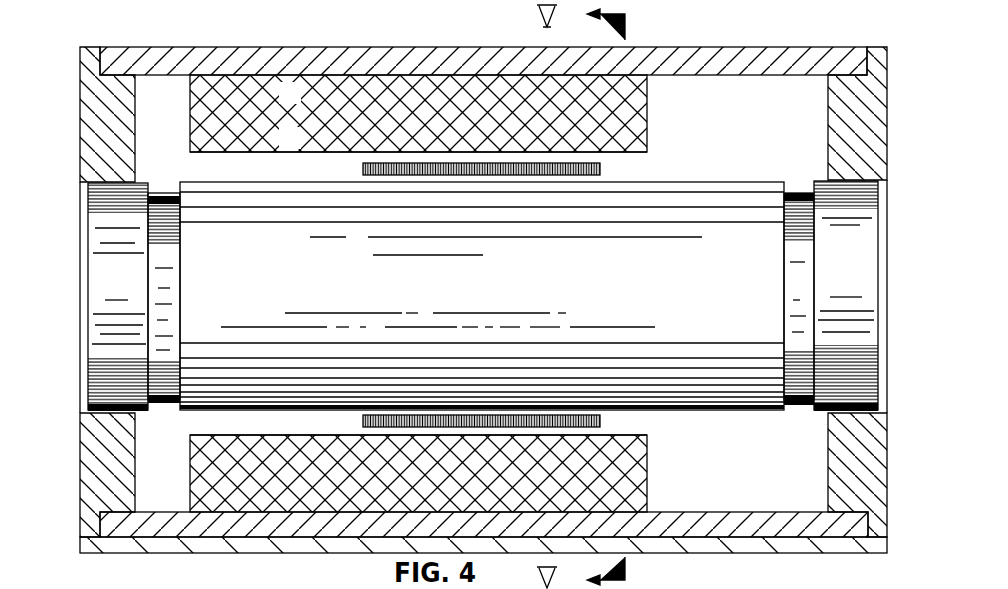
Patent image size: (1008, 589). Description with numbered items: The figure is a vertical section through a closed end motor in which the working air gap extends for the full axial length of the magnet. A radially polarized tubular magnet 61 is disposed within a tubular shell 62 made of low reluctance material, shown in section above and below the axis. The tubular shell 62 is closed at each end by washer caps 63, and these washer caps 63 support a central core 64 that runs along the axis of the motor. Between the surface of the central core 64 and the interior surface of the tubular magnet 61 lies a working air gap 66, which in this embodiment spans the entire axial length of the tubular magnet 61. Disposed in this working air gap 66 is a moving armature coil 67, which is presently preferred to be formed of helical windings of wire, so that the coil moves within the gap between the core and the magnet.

The tubular magnet 61 is at (645, 112).
The tubular shell 62 is at (318, 50).
The washer cap 63 is at (90, 106).
The central core 64 is at (205, 188).
The working air gap 66 is at (660, 147).
The moving armature coil 67 is at (600, 170).